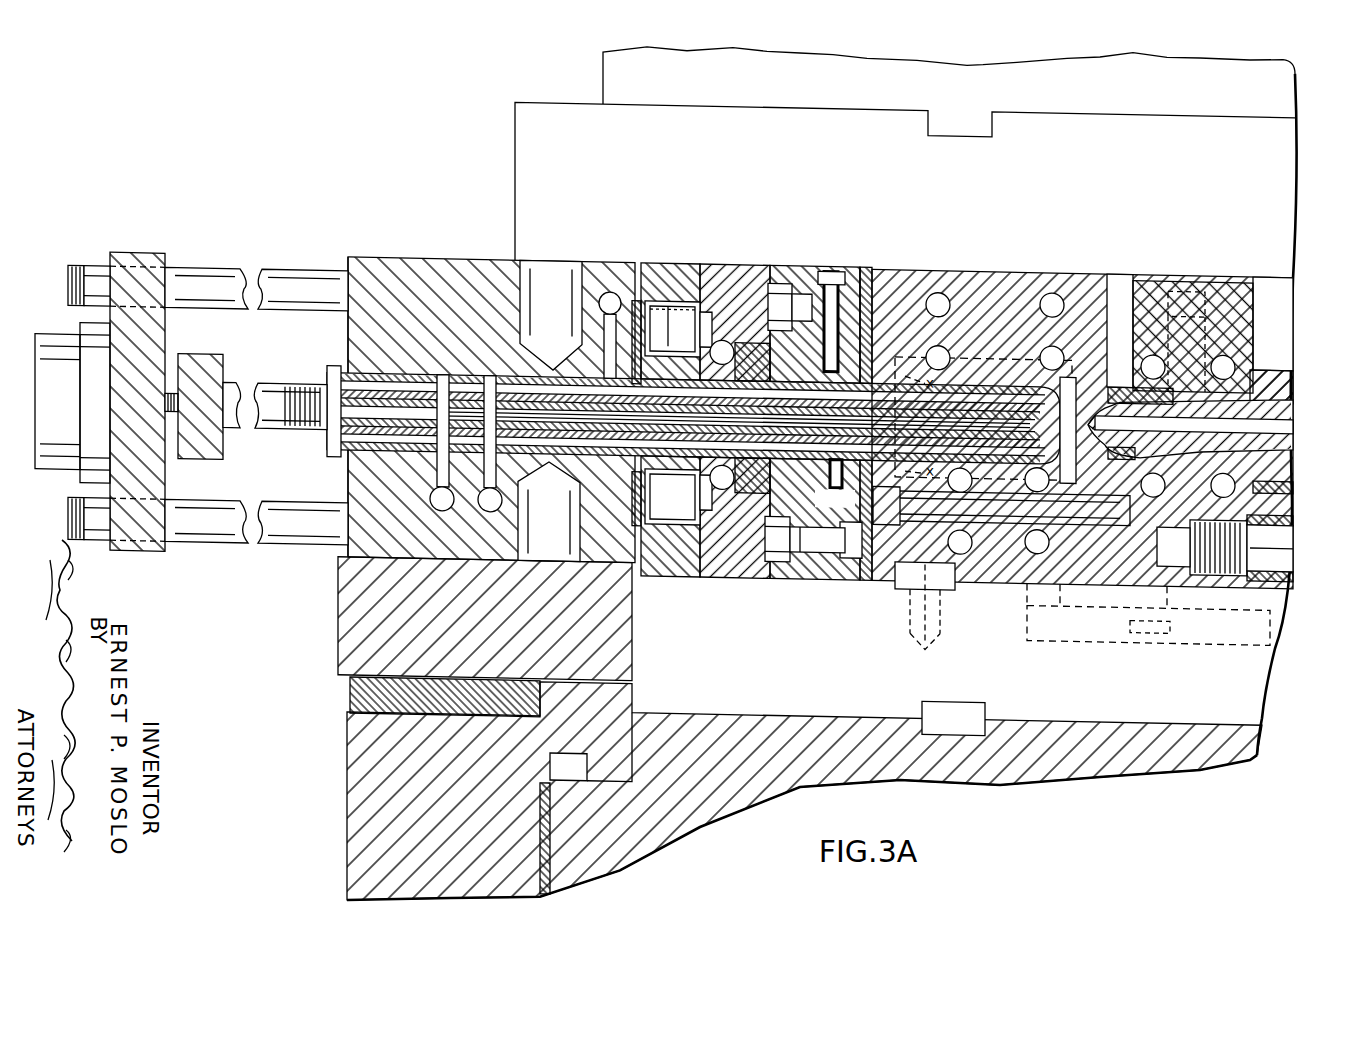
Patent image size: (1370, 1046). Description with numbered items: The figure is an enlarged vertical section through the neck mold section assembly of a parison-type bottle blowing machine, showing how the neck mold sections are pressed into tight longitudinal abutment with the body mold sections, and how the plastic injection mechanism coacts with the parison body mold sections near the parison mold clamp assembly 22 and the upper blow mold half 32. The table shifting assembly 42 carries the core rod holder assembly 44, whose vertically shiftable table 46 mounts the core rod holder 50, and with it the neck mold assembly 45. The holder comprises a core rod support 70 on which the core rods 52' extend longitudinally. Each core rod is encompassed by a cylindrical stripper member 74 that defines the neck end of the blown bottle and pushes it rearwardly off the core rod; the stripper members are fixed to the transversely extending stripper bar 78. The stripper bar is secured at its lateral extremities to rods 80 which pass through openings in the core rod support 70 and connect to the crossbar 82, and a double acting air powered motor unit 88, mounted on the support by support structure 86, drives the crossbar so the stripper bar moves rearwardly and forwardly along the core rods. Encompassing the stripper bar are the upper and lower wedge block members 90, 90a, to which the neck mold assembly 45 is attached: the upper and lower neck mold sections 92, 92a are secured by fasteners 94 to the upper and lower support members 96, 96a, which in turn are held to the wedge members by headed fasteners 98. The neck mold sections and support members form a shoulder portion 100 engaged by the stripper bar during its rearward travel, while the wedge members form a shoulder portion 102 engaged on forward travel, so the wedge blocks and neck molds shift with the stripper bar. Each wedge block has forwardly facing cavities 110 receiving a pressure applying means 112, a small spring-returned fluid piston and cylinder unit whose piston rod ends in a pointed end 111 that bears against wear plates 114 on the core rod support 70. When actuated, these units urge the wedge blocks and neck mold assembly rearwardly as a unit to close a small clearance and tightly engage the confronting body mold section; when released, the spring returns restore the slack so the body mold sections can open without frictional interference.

The parison mold clamp assembly 22 is at (1305, 238).
The upper blow mold half 32 is at (1100, 322).
The table shifting assembly 42 is at (347, 790).
The core rod holder assembly 44 is at (482, 255).
The neck mold assembly 45 is at (871, 262).
The vertically shiftable table 46 is at (345, 602).
The core rod holder 50 is at (440, 256).
The core rod 52' is at (1082, 403).
The core rod support 70 is at (373, 256).
The stripper member 74 is at (878, 335).
The stripper bar 78 is at (800, 556).
The rods 80 is at (268, 386).
The crossbar 82 is at (218, 358).
The support structure 86 is at (300, 272).
The motor unit 88 is at (55, 345).
The upper wedge block member 90 is at (704, 300).
The lower wedge block member 90a is at (700, 530).
The upper neck mold section 92 is at (870, 370).
The lower neck mold section 92a is at (860, 566).
The fasteners 94 is at (836, 275).
The upper support member 96 is at (882, 270).
The lower support member 96a is at (846, 560).
The headed fasteners 98 is at (810, 280).
The shoulder portion 100 is at (800, 482).
The shoulder portion 102 is at (745, 296).
The cavities 110 is at (680, 294).
The pointed end 111 is at (668, 294).
The pressure applying means 112 is at (738, 290).
The wear plates 114 is at (637, 294).